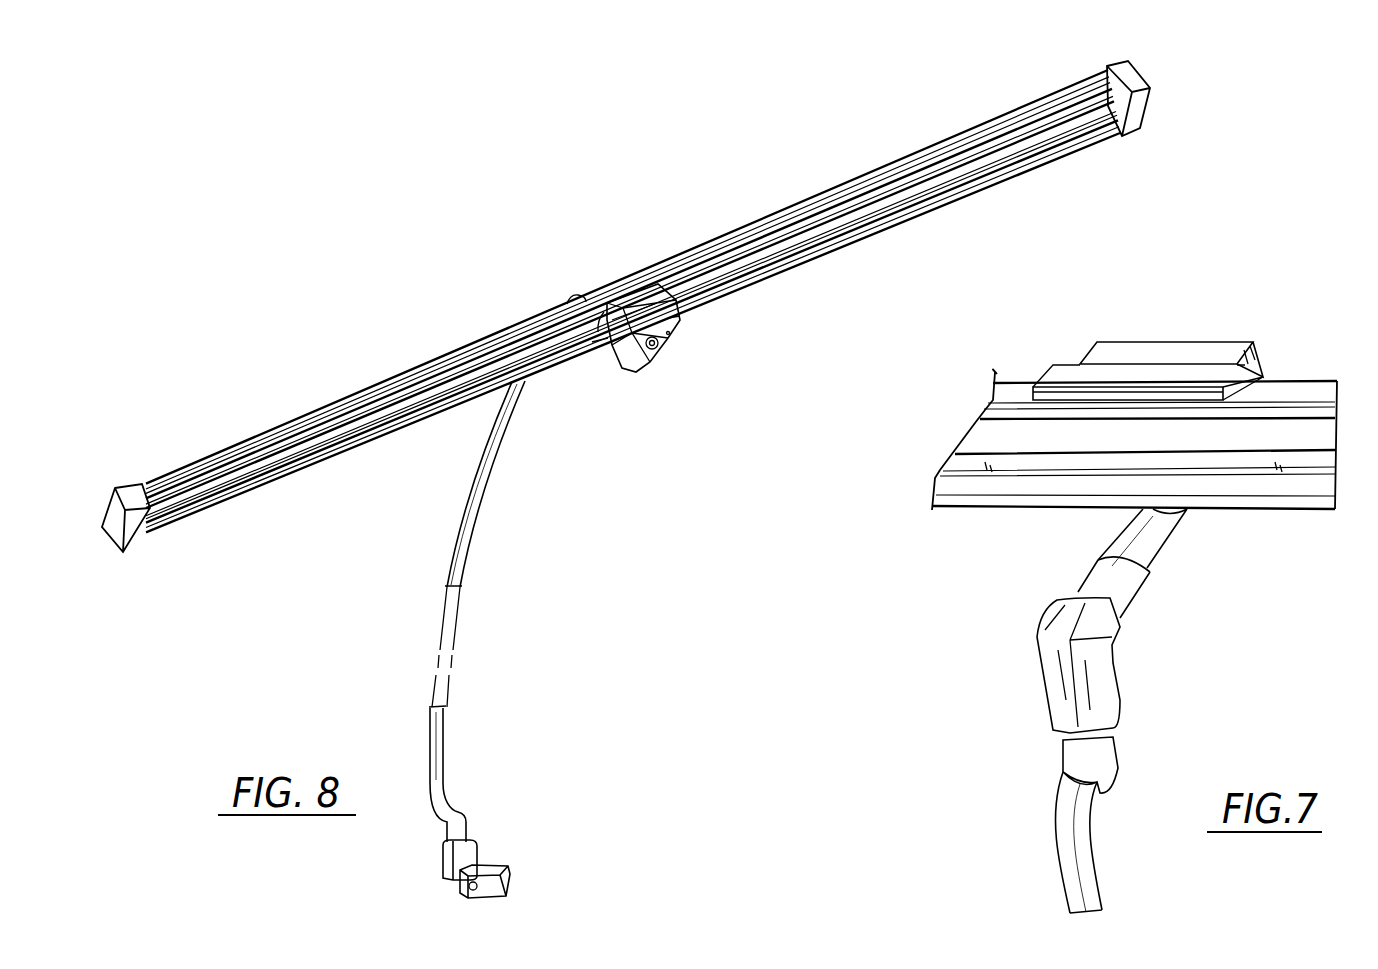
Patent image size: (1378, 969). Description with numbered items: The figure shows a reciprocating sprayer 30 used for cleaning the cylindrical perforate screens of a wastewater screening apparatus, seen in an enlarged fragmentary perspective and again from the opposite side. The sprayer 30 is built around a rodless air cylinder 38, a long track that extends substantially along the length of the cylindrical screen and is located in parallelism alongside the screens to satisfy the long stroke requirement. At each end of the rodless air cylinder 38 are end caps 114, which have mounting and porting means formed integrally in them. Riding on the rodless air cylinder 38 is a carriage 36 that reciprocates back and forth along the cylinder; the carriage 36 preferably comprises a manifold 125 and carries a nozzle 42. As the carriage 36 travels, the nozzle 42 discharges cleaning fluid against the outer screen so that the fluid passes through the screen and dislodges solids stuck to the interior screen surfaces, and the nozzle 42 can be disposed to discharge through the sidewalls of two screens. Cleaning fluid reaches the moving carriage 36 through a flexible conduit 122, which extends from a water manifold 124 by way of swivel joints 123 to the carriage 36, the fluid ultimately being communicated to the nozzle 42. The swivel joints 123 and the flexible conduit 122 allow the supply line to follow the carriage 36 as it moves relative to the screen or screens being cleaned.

In FIG. 8, the end cap 114 is at (1135, 83).
In FIG. 8, the rodless air cylinder 38 is at (789, 210).
In FIG. 7, the rodless air cylinder 38 is at (1360, 338).
In FIG. 8, the reciprocating sprayer 30 is at (691, 338).
In FIG. 7, the reciprocating sprayer 30 is at (1151, 339).
In FIG. 8, the manifold 125 is at (672, 337).
In FIG. 7, the manifold 125 is at (1168, 306).
In FIG. 8, the nozzle 42 is at (660, 347).
In FIG. 8, the carriage 36 is at (590, 347).
In FIG. 7, the carriage 36 is at (1053, 372).
In FIG. 8, the flexible conduit 122 is at (428, 713).
In FIG. 7, the flexible conduit 122 is at (1092, 887).
In FIG. 8, the swivel joint 123 is at (478, 859).
In FIG. 7, the swivel joint 123 is at (1115, 720).
In FIG. 8, the water manifold 124 is at (504, 870).